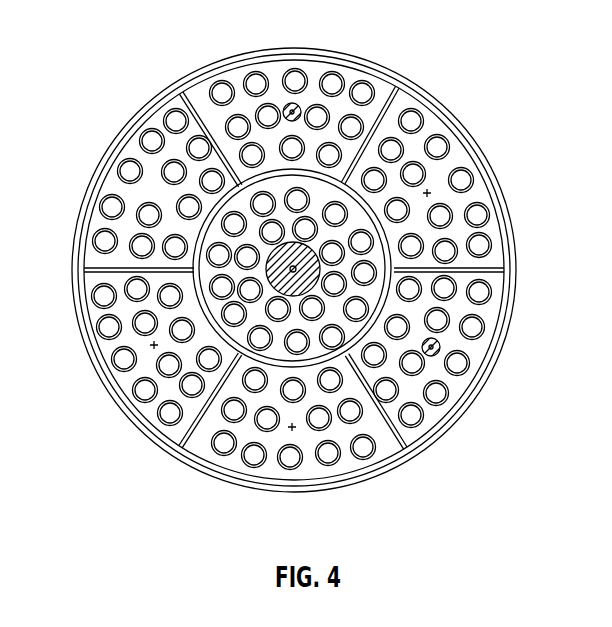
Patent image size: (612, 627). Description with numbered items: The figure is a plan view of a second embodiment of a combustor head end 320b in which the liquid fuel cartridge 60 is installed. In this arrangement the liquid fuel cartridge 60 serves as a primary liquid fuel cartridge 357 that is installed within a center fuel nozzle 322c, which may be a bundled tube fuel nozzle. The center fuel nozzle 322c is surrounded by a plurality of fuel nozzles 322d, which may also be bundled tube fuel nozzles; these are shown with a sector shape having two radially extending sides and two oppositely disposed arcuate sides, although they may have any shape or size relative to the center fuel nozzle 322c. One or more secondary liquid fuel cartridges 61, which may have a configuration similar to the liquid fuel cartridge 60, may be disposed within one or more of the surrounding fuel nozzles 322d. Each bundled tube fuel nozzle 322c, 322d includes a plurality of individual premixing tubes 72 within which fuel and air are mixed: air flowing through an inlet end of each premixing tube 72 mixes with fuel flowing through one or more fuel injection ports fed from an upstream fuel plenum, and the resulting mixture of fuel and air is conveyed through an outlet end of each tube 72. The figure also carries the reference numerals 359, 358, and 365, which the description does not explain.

The combustor head end 320b is at (85, 92).
The alignment opening 359 is at (287, 104).
The fuel nozzles 322d is at (396, 79).
The plate face 358 is at (454, 163).
The central aperture 365 is at (290, 266).
The liquid fuel cartridge 60 is at (256, 270).
The secondary liquid fuel cartridges 61 is at (442, 348).
The premixing tubes 72 is at (249, 465).
The center fuel nozzle 322c is at (345, 359).
The primary liquid fuel cartridge 357 is at (294, 307).